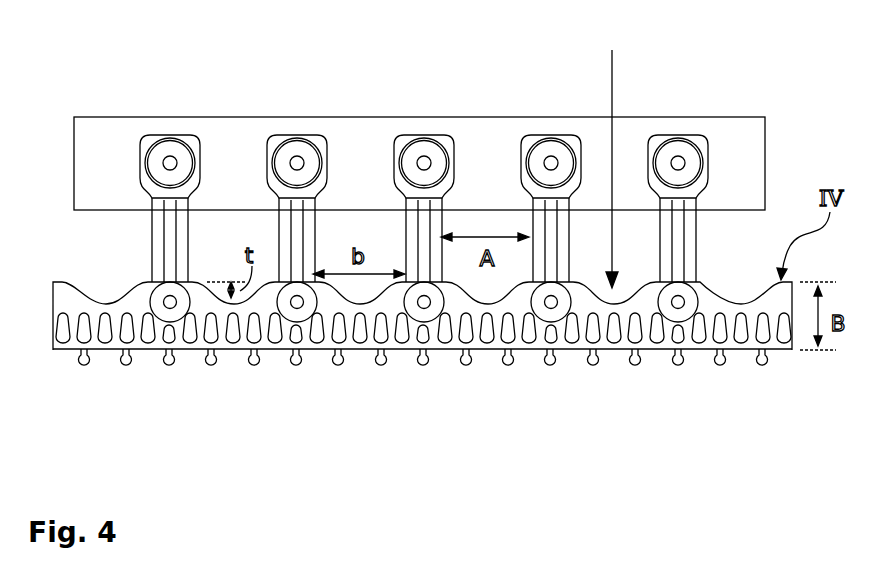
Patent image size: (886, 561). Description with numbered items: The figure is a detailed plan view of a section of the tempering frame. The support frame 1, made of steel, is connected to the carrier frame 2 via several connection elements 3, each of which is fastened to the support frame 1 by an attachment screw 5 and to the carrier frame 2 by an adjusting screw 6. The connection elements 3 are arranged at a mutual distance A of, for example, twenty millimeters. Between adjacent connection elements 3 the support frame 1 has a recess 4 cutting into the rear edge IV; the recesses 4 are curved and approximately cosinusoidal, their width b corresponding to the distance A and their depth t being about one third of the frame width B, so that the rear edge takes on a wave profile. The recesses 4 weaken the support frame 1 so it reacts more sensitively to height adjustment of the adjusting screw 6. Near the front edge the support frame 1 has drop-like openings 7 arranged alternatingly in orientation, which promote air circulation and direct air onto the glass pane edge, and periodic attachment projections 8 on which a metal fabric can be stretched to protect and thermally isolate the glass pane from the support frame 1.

The support frame 1 is at (67, 297).
The carrier frame 2 is at (94, 150).
The connection element 3 is at (175, 237).
The recess 4 is at (612, 150).
The attachment screw 5 is at (173, 310).
The adjusting screw 6 is at (163, 150).
The drop-like opening 7 is at (234, 330).
The attachment projection 8 is at (127, 363).